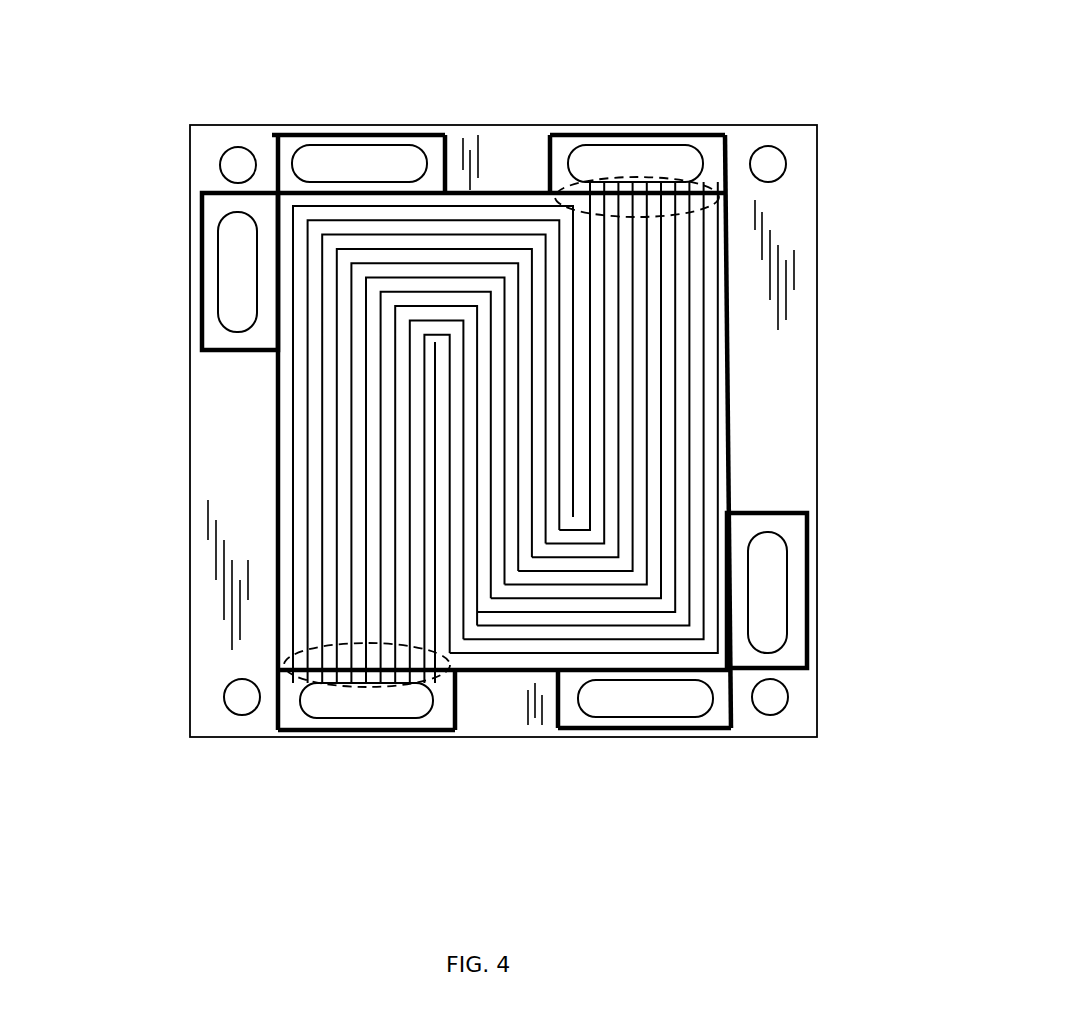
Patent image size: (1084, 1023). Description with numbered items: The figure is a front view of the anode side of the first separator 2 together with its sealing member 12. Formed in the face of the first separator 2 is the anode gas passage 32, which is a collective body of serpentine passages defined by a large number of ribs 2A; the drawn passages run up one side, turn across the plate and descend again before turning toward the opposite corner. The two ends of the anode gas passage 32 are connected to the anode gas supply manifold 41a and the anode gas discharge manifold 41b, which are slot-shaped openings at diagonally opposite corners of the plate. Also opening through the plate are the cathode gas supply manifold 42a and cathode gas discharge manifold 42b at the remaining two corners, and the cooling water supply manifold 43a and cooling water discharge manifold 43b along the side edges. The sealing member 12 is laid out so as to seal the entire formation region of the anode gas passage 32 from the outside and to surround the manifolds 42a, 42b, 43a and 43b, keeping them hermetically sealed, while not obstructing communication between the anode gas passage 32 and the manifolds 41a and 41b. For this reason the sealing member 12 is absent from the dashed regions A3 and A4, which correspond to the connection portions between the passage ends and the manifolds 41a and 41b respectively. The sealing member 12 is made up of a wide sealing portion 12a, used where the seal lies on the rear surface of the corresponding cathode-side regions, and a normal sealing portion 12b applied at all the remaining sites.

The first separator 2 is at (808, 274).
The ribs 2A is at (498, 432).
The sealing member 12 is at (491, 417).
The wide sealing portion 12a is at (407, 191).
The normal sealing portion 12b is at (338, 133).
The anode gas passage 32 is at (658, 462).
The anode gas supply manifold 41a is at (328, 707).
The anode gas discharge manifold 41b is at (598, 162).
The cathode gas supply manifold 42a is at (312, 156).
The cathode gas discharge manifold 42b is at (598, 708).
The cooling water supply manifold 43a is at (778, 576).
The cooling water discharge manifold 43b is at (228, 268).
The region A3 is at (706, 178).
The region A4 is at (438, 688).